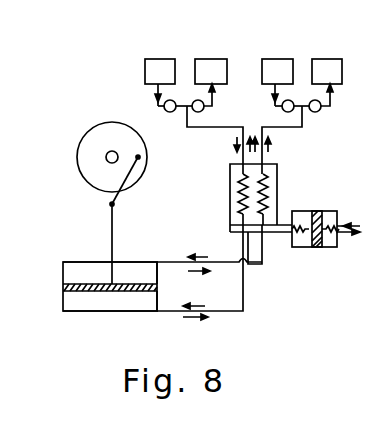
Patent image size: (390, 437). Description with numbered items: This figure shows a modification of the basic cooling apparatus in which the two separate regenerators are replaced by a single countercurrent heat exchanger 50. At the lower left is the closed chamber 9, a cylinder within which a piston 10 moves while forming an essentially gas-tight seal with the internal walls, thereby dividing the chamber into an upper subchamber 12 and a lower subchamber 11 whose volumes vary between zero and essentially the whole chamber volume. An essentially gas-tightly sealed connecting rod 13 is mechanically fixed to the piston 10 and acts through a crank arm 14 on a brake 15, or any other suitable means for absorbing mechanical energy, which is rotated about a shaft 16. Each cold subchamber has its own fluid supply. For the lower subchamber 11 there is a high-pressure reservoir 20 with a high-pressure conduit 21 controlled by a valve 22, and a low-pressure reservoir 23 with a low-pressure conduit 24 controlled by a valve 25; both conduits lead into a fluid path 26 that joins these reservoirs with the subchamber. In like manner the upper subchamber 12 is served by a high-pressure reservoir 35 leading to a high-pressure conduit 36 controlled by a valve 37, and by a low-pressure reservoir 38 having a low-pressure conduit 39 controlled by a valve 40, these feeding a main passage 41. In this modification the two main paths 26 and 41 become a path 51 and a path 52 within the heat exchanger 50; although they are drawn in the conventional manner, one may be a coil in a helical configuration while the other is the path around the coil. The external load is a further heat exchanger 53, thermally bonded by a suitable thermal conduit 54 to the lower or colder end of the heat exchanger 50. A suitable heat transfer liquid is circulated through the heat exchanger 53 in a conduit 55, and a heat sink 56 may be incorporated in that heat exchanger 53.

The closed chamber 9 is at (151, 262).
The piston 10 is at (63, 288).
The lower subchamber 11 is at (87, 270).
The upper subchamber 12 is at (78, 307).
The connecting rod 13 is at (113, 243).
The crank arm 14 is at (134, 179).
The brake 15 is at (77, 168).
The shaft 16 is at (106, 154).
The high-pressure reservoir 20 is at (162, 63).
The high-pressure conduit 21 is at (156, 92).
The valve 22 is at (166, 112).
The low-pressure reservoir 23 is at (215, 62).
The low-pressure conduit 24 is at (216, 98).
The valve 25 is at (203, 111).
The fluid path 26 is at (223, 129).
The high-pressure reservoir 35 is at (284, 63).
The high-pressure conduit 36 is at (274, 98).
The valve 37 is at (285, 112).
The low-pressure reservoir 38 is at (336, 63).
The low-pressure conduit 39 is at (336, 101).
The valve 40 is at (318, 112).
The main passage 41 is at (283, 130).
The heat exchanger 50 is at (229, 182).
The path 51 is at (238, 204).
The path 52 is at (268, 190).
The heat exchanger 53 is at (330, 248).
The thermal conduit 54 is at (278, 226).
The conduit 55 is at (344, 226).
The heat sink 56 is at (315, 248).